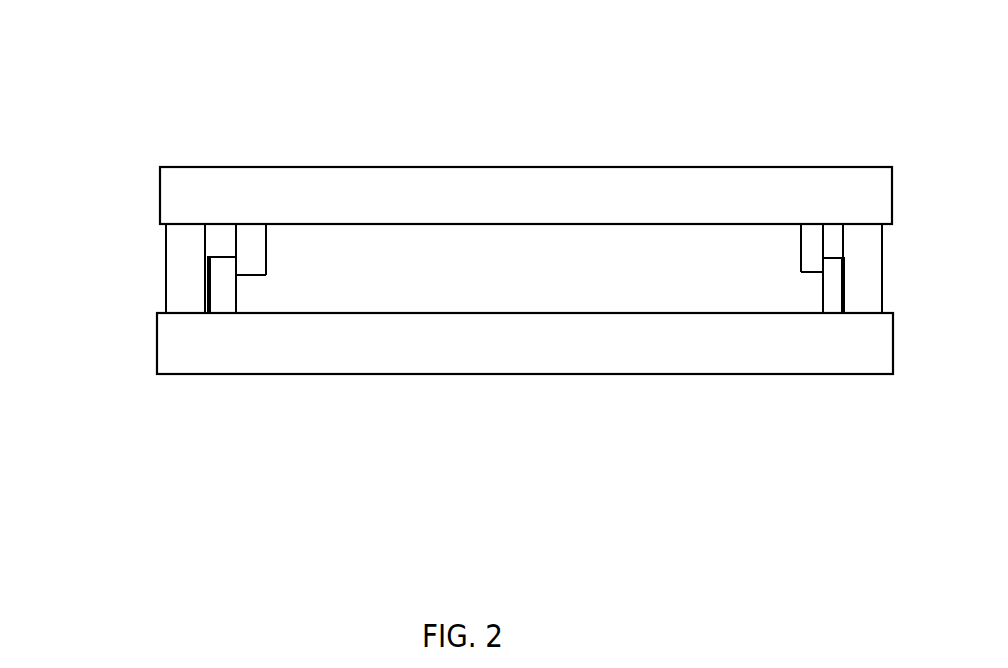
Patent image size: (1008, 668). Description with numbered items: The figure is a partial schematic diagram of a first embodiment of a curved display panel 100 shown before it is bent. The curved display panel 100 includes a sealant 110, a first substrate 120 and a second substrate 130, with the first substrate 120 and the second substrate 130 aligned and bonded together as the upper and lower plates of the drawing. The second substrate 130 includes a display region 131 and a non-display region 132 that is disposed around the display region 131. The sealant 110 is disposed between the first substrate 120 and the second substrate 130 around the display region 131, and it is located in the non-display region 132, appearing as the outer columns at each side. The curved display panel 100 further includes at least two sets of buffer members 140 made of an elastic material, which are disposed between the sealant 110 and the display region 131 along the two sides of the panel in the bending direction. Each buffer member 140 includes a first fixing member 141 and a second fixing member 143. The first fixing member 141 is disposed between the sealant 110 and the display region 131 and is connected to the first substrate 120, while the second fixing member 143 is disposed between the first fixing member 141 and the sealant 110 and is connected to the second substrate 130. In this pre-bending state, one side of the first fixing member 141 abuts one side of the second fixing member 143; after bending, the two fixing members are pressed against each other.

The curved display panel 100 is at (194, 69).
The sealant 110 is at (187, 244).
The first substrate 120 is at (553, 195).
The second substrate 130 is at (468, 337).
The display region 131 is at (547, 313).
The non-display region 132 is at (257, 313).
The buffer member 140 is at (511, 356).
The first fixing member 141 is at (254, 262).
The second fixing member 143 is at (220, 297).